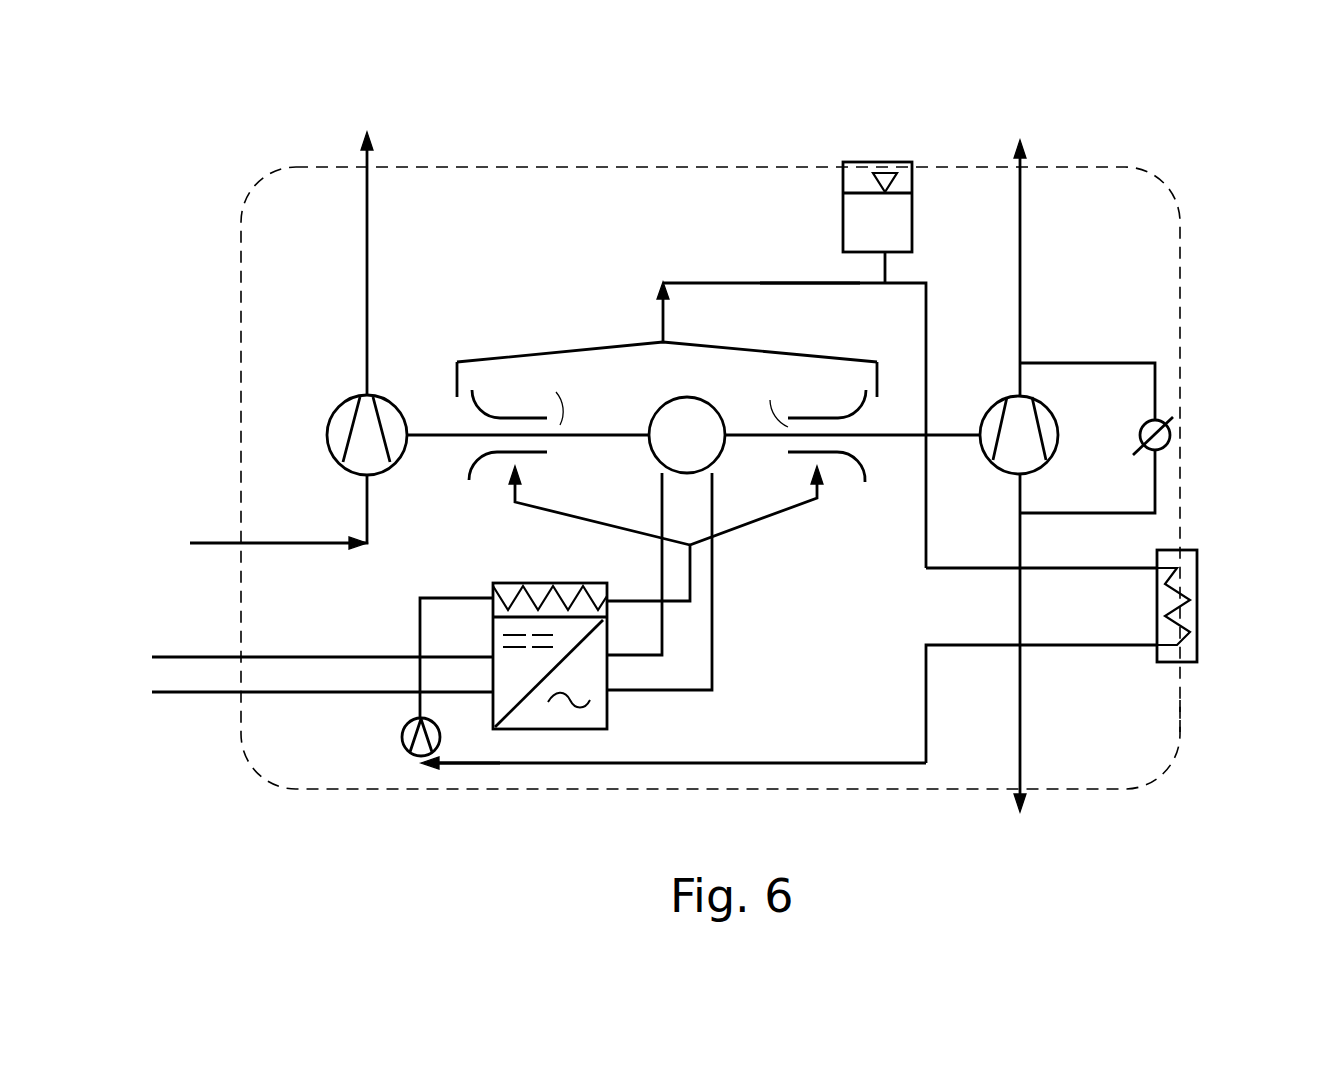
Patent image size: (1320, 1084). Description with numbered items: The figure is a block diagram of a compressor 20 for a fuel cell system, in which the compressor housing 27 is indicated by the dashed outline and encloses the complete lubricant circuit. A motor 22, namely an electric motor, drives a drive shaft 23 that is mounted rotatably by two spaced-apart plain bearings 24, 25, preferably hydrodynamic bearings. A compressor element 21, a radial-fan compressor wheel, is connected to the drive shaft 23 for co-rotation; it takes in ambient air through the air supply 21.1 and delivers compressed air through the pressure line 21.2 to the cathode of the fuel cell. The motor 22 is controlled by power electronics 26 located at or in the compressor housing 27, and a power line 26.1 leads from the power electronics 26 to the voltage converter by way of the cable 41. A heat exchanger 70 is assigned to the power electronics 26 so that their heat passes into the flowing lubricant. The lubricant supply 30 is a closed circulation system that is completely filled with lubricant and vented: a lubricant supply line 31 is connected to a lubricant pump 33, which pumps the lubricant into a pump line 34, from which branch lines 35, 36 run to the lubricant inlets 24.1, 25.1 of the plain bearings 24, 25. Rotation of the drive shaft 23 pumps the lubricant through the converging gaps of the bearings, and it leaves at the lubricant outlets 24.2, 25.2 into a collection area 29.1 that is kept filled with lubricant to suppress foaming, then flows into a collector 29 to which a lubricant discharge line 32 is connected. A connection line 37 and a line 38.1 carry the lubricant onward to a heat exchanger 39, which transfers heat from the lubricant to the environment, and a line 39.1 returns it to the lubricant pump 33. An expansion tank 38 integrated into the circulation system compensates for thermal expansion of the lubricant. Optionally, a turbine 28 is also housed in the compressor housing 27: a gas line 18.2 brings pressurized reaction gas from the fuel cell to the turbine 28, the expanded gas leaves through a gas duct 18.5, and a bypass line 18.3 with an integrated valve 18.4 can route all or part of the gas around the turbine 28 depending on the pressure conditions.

The compressor 20 is at (247, 797).
The compressor element 21 is at (343, 420).
The air supply 21.1 is at (210, 543).
The pressure line 21.2 is at (365, 148).
The motor 22 is at (688, 408).
The drive shaft 23 is at (600, 433).
The plain bearing 24 is at (500, 418).
The lubricant inlet 24.1 is at (558, 425).
The lubricant outlet 24.2 is at (465, 395).
The plain bearing 25 is at (830, 418).
The lubricant inlet 25.1 is at (788, 427).
The lubricant outlet 25.2 is at (873, 393).
The power electronics 26 is at (543, 718).
The power line 26.1 is at (712, 648).
The compressor housing 27 is at (1175, 765).
The turbine 28 is at (1017, 410).
The collector 29 is at (617, 343).
The collection area 29.1 is at (634, 365).
The lubricant supply 30 is at (653, 765).
The lubricant supply line 31 is at (457, 763).
The lubricant discharge line 32 is at (665, 317).
The lubricant pump 33 is at (402, 732).
The pump line 34 is at (418, 630).
The branch line 35 is at (540, 512).
The branch line 36 is at (773, 518).
The connection line 37 is at (764, 282).
The expansion tank 38 is at (887, 220).
The line 38.1 is at (1100, 568).
The heat exchanger 39 is at (1188, 608).
The line 39.1 is at (1080, 645).
The cable 41 is at (208, 695).
The heat exchanger 70 is at (545, 583).
The gas line 18.2 is at (1018, 195).
The bypass line 18.3 is at (1157, 393).
The valve 18.4 is at (1172, 437).
The gas duct 18.5 is at (1018, 748).